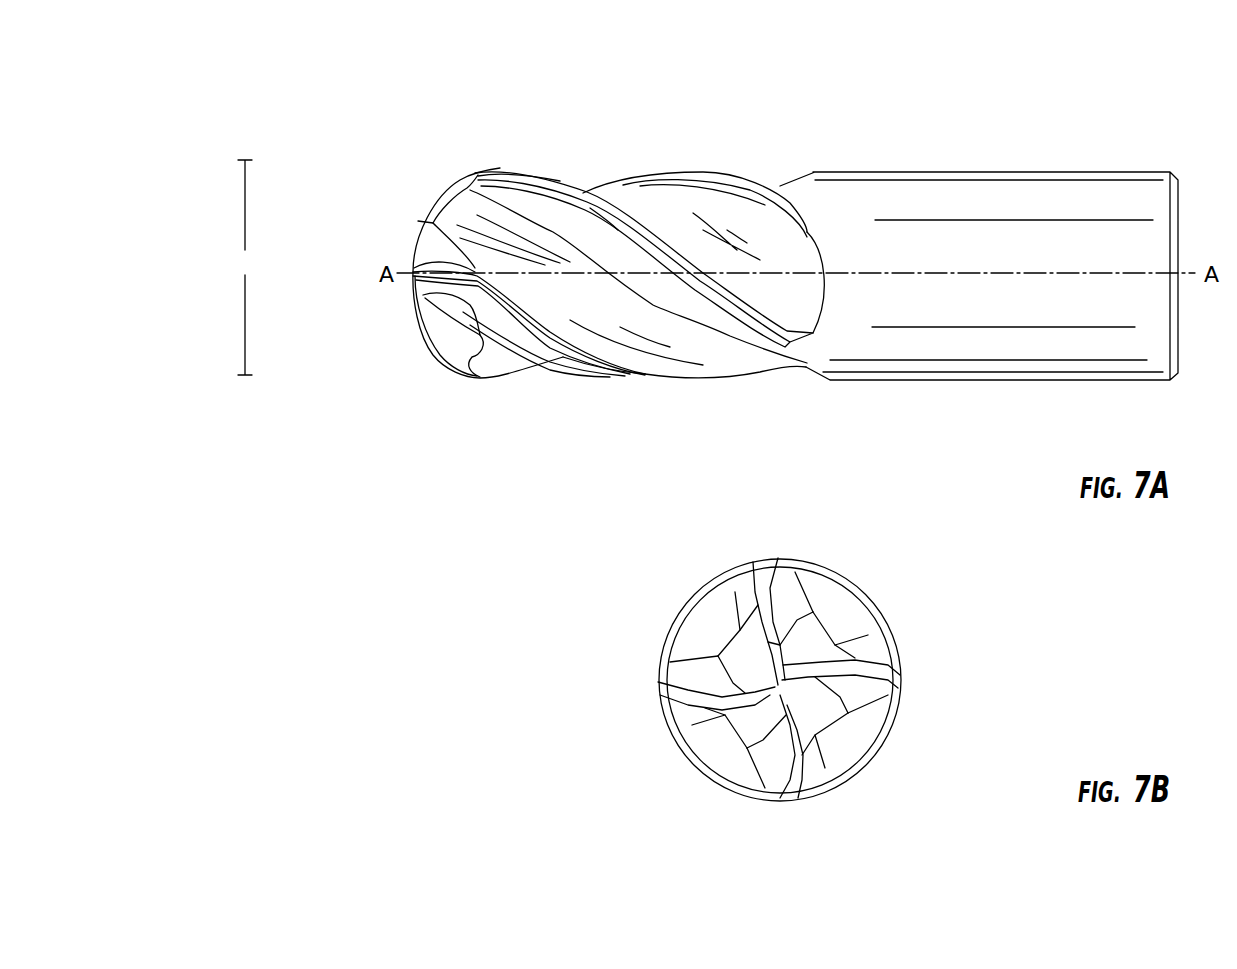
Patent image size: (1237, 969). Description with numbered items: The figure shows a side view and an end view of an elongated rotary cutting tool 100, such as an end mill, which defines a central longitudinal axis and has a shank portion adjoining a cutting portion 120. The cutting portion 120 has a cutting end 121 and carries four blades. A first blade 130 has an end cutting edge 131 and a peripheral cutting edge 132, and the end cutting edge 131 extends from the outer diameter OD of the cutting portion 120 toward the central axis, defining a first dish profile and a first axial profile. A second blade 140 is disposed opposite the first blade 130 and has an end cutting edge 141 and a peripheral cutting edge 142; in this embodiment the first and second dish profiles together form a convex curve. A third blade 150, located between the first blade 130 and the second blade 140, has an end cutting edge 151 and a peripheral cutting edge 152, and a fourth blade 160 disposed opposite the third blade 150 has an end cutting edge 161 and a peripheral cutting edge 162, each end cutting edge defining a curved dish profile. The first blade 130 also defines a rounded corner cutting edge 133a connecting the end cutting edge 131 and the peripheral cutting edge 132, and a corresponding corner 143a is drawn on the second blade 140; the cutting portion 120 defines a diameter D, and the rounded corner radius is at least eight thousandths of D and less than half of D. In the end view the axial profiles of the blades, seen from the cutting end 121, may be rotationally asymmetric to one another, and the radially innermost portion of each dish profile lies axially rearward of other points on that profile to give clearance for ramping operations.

In FIG. 7A, the rotary cutting tool 100 is at (988, 120).
In FIG. 7A, the cutting portion 120 is at (620, 140).
In FIG. 7A, the cutting end 121 is at (345, 253).
In FIG. 7A, the first blade 130 is at (520, 373).
In FIG. 7B, the first blade 130 is at (799, 848).
In FIG. 7A, the end cutting edge 131 is at (413, 303).
In FIG. 7B, the end cutting edge 131 is at (800, 737).
In FIG. 7A, the peripheral cutting edge 132 is at (493, 377).
In FIG. 7B, the peripheral cutting edge 132 is at (777, 798).
In FIG. 7A, the rounded corner cutting edge 133a is at (430, 353).
In FIG. 7A, the second blade 140 is at (532, 170).
In FIG. 7B, the second blade 140 is at (763, 530).
In FIG. 7A, the end cutting edge 141 is at (412, 242).
In FIG. 7B, the end cutting edge 141 is at (760, 637).
In FIG. 7A, the peripheral cutting edge 142 is at (487, 170).
In FIG. 7B, the peripheral cutting edge 142 is at (773, 557).
In FIG. 7A, the second gash 143a is at (447, 187).
In FIG. 7A, the third blade 150 is at (678, 380).
In FIG. 7B, the third blade 150 is at (946, 708).
In FIG. 7A, the end cutting edge 151 is at (413, 280).
In FIG. 7B, the end cutting edge 151 is at (890, 667).
In FIG. 7A, the peripheral cutting edge 152 is at (593, 363).
In FIG. 7B, the peripheral cutting edge 152 is at (903, 687).
In FIG. 7A, the fourth blade 160 is at (700, 172).
In FIG. 7B, the fourth blade 160 is at (610, 683).
In FIG. 7B, the end cutting edge 161 is at (707, 713).
In FIG. 7B, the peripheral cutting edge 162 is at (657, 673).
In FIG. 7B, the outer diameter OD is at (860, 587).
In FIG. 7A, the diameter D is at (247, 267).